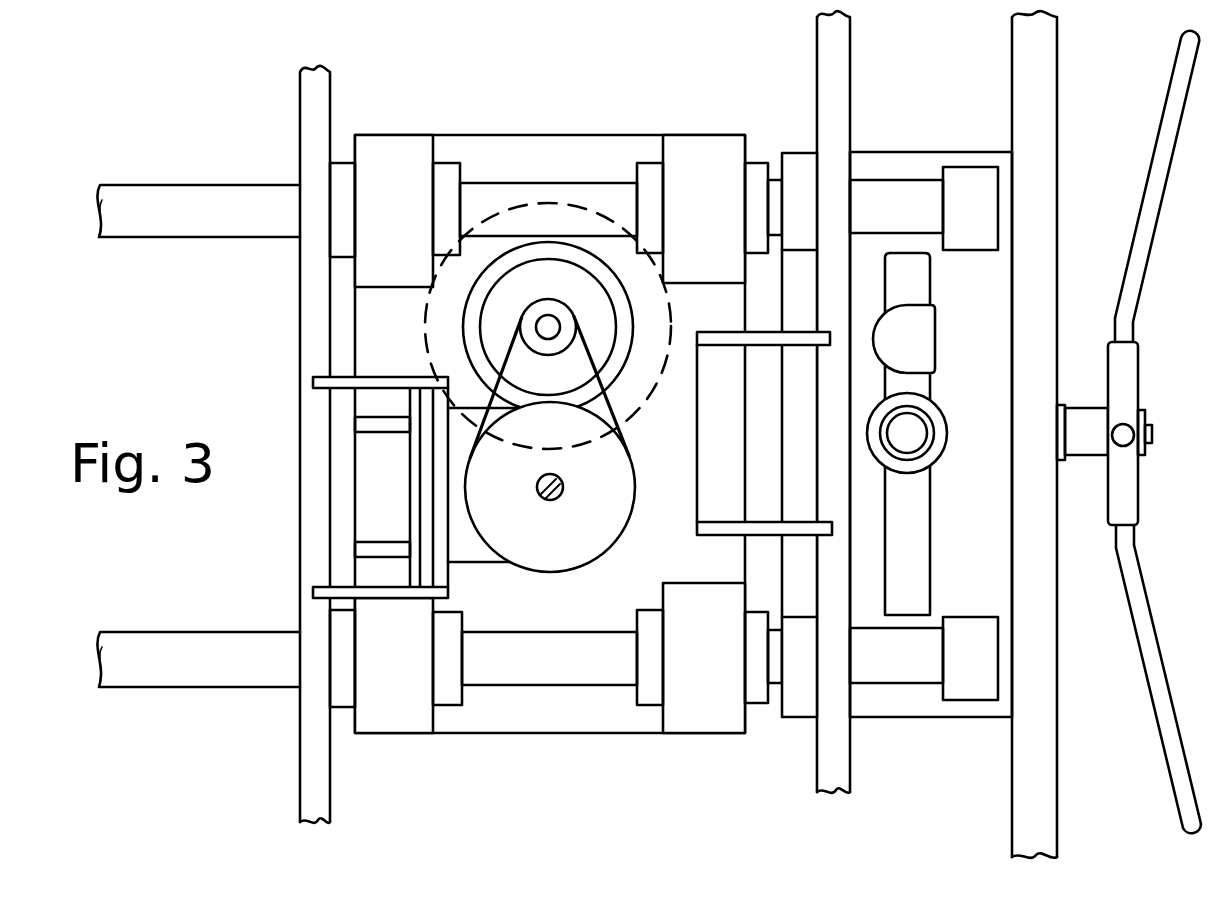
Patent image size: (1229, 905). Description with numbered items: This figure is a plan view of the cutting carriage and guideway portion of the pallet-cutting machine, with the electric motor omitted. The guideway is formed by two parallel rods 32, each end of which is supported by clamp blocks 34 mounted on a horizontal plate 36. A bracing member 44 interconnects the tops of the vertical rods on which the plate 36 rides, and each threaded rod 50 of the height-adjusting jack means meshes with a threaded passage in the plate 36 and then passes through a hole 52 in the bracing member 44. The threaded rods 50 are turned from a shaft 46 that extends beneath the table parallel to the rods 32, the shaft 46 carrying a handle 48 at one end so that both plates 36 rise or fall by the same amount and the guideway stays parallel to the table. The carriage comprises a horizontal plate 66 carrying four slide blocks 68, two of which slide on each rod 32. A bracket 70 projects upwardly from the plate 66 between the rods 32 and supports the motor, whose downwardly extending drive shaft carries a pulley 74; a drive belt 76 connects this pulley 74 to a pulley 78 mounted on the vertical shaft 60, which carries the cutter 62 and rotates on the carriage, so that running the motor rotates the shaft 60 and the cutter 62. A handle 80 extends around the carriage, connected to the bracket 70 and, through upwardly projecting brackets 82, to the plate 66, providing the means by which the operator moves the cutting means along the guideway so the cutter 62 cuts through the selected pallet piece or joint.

The rods 32 is at (190, 215).
The clamp blocks 34 is at (800, 180).
The plate 36 is at (903, 677).
The bracing member 44 is at (912, 548).
The shaft 46 is at (1087, 416).
The handle 48 is at (1143, 252).
The threaded rods 50 is at (917, 428).
The hole 52 is at (920, 445).
The vertical shaft 60 is at (545, 320).
The cutter 62 is at (586, 150).
The horizontal plate 66 is at (560, 735).
The slide blocks 68 is at (392, 150).
The bracket 70 is at (425, 485).
The pulley 74 is at (590, 530).
The drive belt 76 is at (607, 428).
The pulley 78 is at (525, 318).
The handle 80 is at (312, 775).
The brackets 82 is at (760, 335).